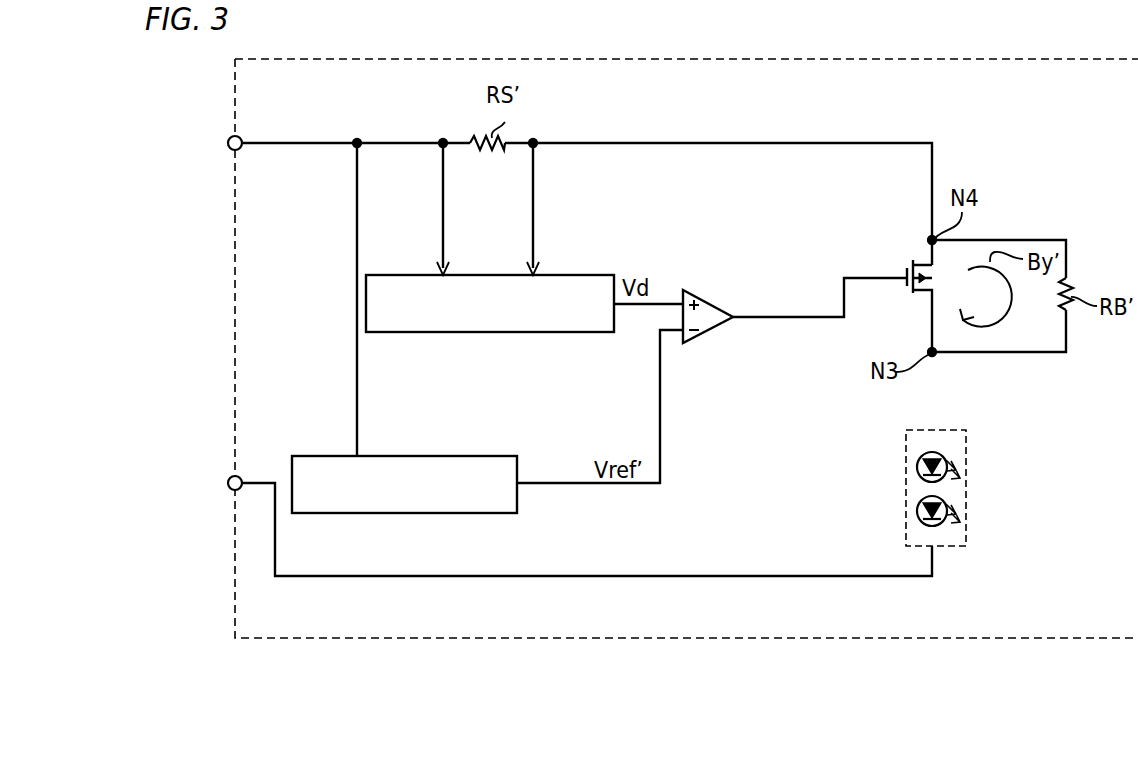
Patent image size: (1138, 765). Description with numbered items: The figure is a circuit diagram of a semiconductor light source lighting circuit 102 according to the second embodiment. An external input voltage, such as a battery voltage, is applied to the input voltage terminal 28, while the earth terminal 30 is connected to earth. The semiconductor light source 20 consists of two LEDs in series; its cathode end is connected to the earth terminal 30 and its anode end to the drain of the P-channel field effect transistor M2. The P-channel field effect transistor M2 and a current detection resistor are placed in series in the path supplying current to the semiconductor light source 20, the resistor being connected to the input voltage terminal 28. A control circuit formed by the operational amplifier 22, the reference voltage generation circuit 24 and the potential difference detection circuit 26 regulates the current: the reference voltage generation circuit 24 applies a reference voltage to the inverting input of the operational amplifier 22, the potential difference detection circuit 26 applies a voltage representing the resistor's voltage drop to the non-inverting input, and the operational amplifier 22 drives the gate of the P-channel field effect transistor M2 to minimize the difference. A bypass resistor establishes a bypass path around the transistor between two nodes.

The semiconductor light source lighting circuit 102 is at (1070, 638).
The input voltage terminal 28 is at (238, 150).
The earth terminal 30 is at (237, 476).
The potential difference detection circuit 26 is at (546, 275).
The reference voltage generation circuit 24 is at (472, 456).
The operational amplifier 22 is at (703, 304).
The semiconductor light source 20 is at (968, 439).
The P-channel field effect transistor M2 is at (908, 264).